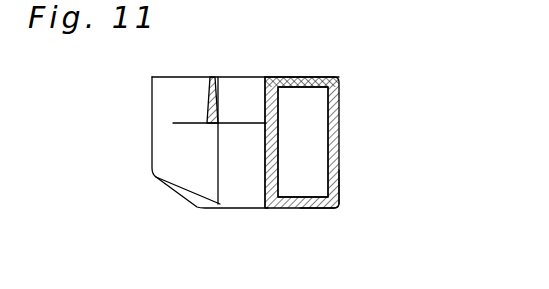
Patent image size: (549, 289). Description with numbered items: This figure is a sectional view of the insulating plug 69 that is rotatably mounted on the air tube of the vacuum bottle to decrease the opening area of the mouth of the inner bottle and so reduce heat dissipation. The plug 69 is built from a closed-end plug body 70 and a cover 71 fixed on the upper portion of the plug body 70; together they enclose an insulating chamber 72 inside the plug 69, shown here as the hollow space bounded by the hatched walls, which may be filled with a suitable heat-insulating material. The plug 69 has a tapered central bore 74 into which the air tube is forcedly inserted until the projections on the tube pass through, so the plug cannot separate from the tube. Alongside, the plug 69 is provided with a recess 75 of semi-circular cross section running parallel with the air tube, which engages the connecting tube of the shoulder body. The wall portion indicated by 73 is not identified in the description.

The plug 69 is at (356, 152).
The plug body 70 is at (340, 173).
The cover 71 is at (310, 77).
The insulating chamber 72 is at (317, 147).
The side wall 73 is at (268, 160).
The tapered central bore 74 is at (265, 103).
The recess 75 is at (172, 153).